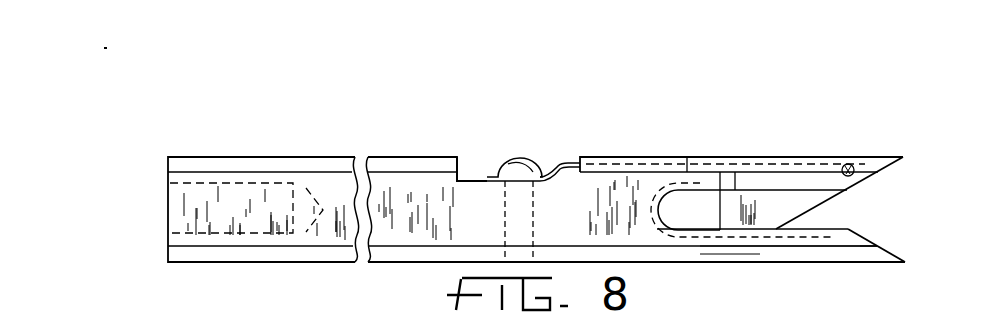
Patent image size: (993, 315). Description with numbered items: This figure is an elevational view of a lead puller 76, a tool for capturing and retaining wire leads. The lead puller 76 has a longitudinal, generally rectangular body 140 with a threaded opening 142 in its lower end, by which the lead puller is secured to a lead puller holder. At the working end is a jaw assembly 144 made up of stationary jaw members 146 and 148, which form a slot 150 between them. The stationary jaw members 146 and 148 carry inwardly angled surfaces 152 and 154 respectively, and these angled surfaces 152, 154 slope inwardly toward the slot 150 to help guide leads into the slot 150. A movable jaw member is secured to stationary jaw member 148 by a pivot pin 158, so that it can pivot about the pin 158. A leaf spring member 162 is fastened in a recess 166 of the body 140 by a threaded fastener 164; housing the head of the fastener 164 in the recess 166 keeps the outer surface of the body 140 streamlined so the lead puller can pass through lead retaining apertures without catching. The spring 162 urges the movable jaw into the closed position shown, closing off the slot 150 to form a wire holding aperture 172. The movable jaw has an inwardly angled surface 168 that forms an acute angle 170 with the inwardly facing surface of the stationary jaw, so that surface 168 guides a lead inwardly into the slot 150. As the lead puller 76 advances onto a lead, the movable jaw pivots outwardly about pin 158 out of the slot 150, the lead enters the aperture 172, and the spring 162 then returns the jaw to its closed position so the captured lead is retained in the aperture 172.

The lead puller 76 is at (436, 267).
The longitudinal generally rectangular body 140 is at (392, 183).
The threaded opening 142 is at (182, 202).
The jaw assembly 144 is at (735, 130).
The stationary jaw member 146 is at (810, 250).
The stationary jaw member 148 is at (662, 157).
The slot 150 is at (827, 228).
The inwardly angled surface 152 is at (880, 247).
The inwardly angled surface 154 is at (900, 168).
The pivot pin 158 is at (851, 163).
The leaf spring member 162 is at (565, 160).
The threaded fastener 164 is at (510, 170).
The recess 166 is at (473, 181).
The inwardly angled surface 168 is at (802, 217).
The acute angle 170 is at (797, 214).
The wire holding aperture 172 is at (686, 207).